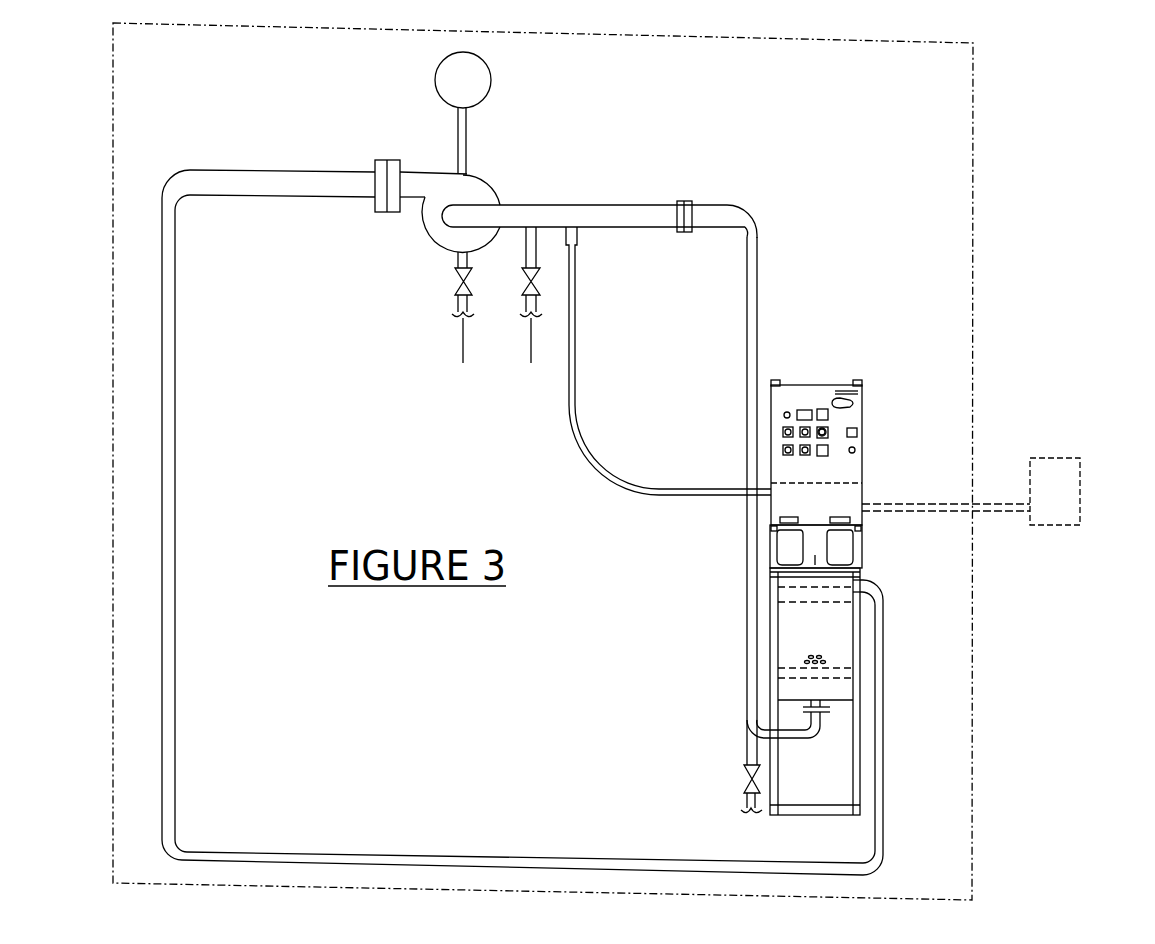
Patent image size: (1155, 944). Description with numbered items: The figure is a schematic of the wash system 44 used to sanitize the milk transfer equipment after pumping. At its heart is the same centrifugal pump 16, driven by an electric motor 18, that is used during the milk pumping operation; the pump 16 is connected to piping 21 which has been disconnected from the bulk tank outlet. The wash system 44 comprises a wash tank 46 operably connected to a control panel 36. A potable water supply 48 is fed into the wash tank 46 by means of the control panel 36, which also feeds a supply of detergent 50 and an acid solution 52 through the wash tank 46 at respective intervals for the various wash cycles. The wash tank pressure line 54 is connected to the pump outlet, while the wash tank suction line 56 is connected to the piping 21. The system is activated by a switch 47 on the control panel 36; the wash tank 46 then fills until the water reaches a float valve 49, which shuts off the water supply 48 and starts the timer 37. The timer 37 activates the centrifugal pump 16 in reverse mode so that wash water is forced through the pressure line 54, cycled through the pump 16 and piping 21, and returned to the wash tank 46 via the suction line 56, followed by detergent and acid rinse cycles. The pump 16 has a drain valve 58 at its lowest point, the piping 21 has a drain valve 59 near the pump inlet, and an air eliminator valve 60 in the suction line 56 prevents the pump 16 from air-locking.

The centrifugal pump 16 is at (437, 232).
The electric motor 18 is at (466, 79).
The piping 21 is at (621, 215).
The control panel 36 is at (780, 397).
The timer 37 is at (775, 440).
The wash system 44 is at (973, 220).
The wash tank 46 is at (823, 632).
The switch 47 is at (826, 433).
The potable water supply 48 is at (1060, 492).
The float valve 49 is at (845, 610).
The detergent 50 is at (790, 547).
The acid solution 52 is at (843, 548).
The wash tank pressure line 54 is at (173, 383).
The wash tank suction line 56 is at (747, 336).
The drain valve 58 is at (462, 331).
The drain valve 59 is at (530, 319).
The air eliminator valve 60 is at (744, 771).